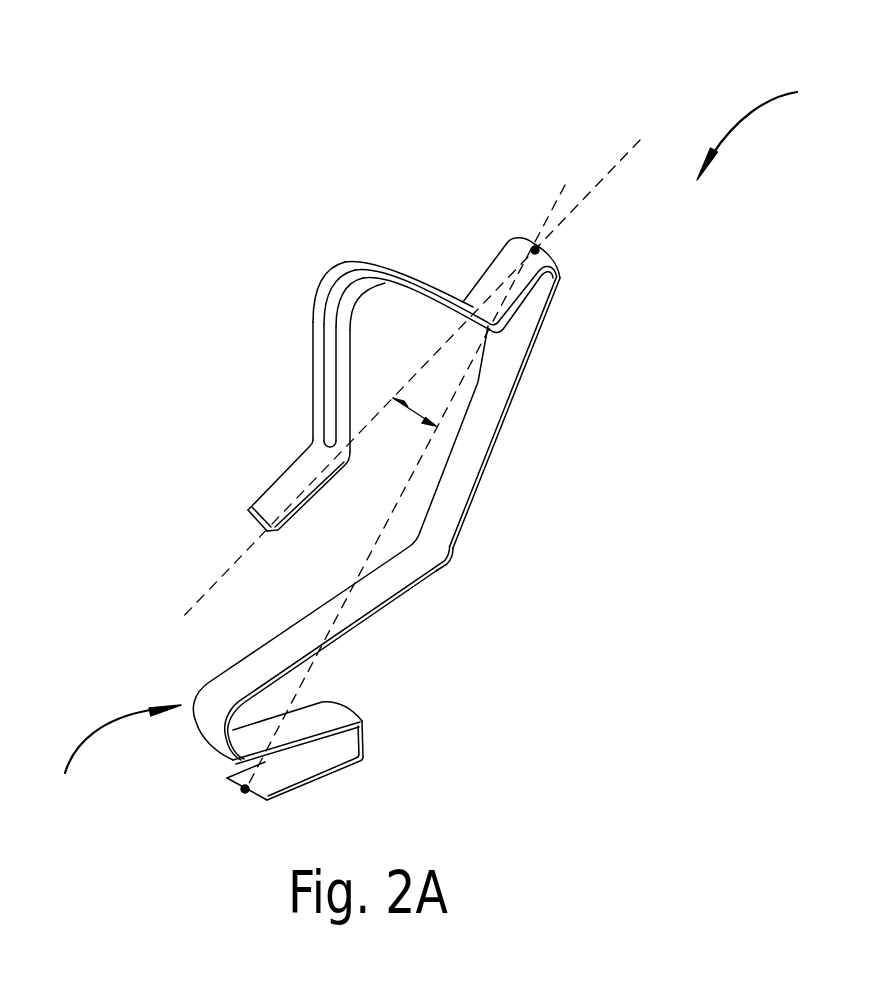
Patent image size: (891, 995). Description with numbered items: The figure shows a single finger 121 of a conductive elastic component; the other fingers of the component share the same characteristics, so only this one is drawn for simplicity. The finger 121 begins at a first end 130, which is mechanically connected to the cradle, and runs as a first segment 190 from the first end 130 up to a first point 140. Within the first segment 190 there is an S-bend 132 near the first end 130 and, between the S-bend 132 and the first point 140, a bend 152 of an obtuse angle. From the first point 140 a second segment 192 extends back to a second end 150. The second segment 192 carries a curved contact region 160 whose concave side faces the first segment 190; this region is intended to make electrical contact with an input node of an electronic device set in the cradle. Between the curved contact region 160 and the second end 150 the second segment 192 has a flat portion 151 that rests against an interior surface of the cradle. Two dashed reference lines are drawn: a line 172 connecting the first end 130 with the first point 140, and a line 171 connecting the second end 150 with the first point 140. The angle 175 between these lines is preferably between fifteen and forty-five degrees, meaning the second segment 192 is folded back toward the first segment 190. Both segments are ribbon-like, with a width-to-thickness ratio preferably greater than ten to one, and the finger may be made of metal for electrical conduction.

The finger 121 is at (767, 125).
The first end 130 is at (245, 790).
The S-bend 132 is at (235, 682).
The first point 140 is at (540, 250).
The second end 150 is at (245, 508).
The flat portion 151 is at (297, 470).
The bend 152 is at (435, 553).
The curved contact region 160 is at (356, 256).
The line 171 is at (200, 601).
The line 172 is at (348, 612).
The angle 175 is at (418, 413).
The first segment 190 is at (472, 453).
The second segment 192 is at (327, 330).